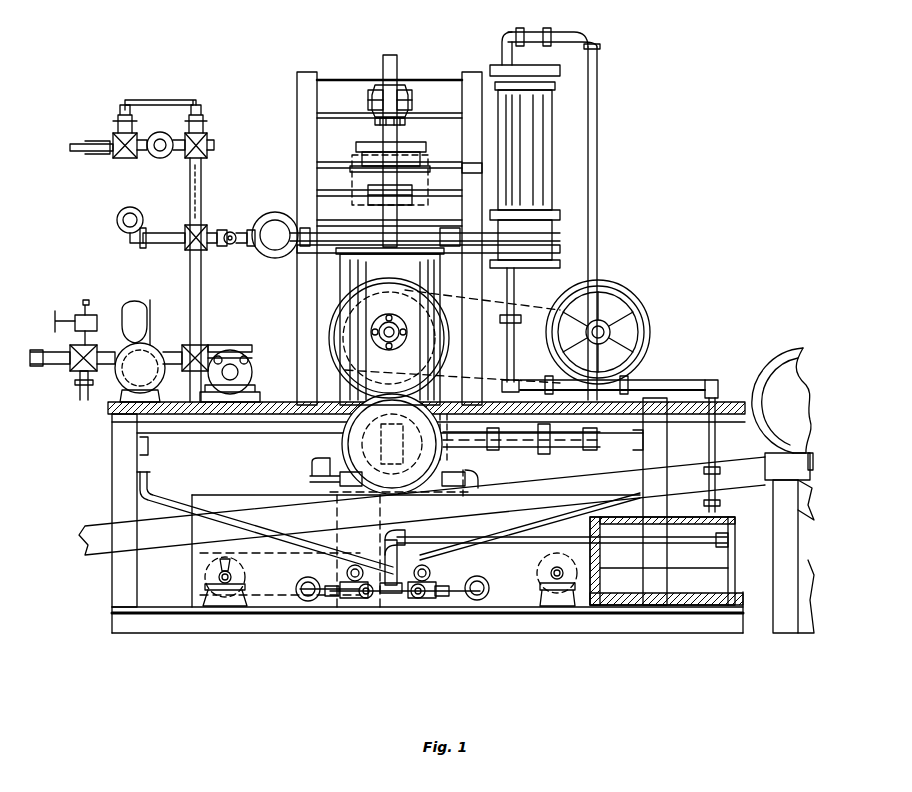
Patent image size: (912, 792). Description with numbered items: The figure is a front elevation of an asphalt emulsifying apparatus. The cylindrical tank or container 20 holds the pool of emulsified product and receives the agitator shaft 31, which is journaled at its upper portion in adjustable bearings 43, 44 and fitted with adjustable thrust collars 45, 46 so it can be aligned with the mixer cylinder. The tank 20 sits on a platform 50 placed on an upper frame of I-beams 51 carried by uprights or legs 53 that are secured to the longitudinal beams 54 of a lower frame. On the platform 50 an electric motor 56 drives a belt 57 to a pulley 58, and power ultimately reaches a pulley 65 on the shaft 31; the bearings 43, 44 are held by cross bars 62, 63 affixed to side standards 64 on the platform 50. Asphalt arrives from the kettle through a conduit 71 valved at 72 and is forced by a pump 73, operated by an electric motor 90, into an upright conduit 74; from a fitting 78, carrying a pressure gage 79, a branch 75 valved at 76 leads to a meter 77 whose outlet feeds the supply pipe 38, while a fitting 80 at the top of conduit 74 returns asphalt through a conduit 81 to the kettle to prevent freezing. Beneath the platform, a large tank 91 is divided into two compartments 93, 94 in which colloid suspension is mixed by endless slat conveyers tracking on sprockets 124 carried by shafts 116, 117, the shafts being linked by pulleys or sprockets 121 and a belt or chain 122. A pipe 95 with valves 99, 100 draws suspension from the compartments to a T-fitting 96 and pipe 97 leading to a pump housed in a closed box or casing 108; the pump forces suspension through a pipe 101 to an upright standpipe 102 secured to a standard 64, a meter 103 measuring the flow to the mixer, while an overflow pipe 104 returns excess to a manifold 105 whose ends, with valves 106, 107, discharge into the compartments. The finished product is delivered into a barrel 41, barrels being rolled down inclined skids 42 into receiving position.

The cylindrical tank or container 20 is at (342, 292).
The agitator shaft 31 is at (398, 65).
The pipe or conduit 38 is at (343, 233).
The barrel 41 is at (783, 352).
The inclined skids 42 is at (690, 470).
The adjustable bearing 43 is at (410, 93).
The adjustable bearing 44 is at (412, 200).
The adjustable thrust collar 45 is at (375, 122).
The adjustable thrust collar 46 is at (352, 179).
The platform 50 is at (678, 382).
The I-beams 51 is at (250, 432).
The uprights or legs 53 is at (662, 432).
The longitudinal beams 54 is at (713, 628).
The electric motor 56 is at (625, 317).
The belt 57 is at (522, 304).
The pulley 58 is at (446, 330).
The cross bar 62 is at (332, 88).
The cross bar 63 is at (338, 255).
The side standards 64 is at (308, 73).
The pulley 65 is at (402, 144).
The conduit 71 is at (96, 313).
The valve 72 is at (70, 315).
The pump 73 is at (133, 375).
The upright conduit 74 is at (188, 284).
The branch 75 is at (250, 226).
The valve 76 is at (229, 248).
The meter 77 is at (272, 259).
The fitting 78 is at (185, 227).
The pressure gage 79 is at (136, 210).
The fitting 80 is at (208, 138).
The conduit 81 is at (97, 137).
The electric motor 90 is at (252, 370).
The large tank 91 is at (200, 565).
The compartment 93 is at (255, 500).
The compartment 94 is at (500, 520).
The pipe 95 is at (332, 607).
The T-fitting 96 is at (410, 607).
The pipe 97 is at (577, 520).
The valve 99 is at (368, 607).
The valve 100 is at (455, 607).
The pipe 101 is at (515, 336).
The upright tank or standpipe 102 is at (548, 160).
The meter 103 is at (468, 168).
The overflow pipe 104 is at (597, 207).
The manifold 105 is at (466, 470).
The valve 106 is at (335, 470).
The valve 107 is at (440, 493).
The closed box or casing 108 is at (735, 517).
The shaft 116 is at (345, 607).
The shaft 117 is at (538, 573).
The pulleys or sprockets 121 is at (325, 588).
The belt or chain 122 is at (380, 550).
The sprockets 124 is at (246, 578).